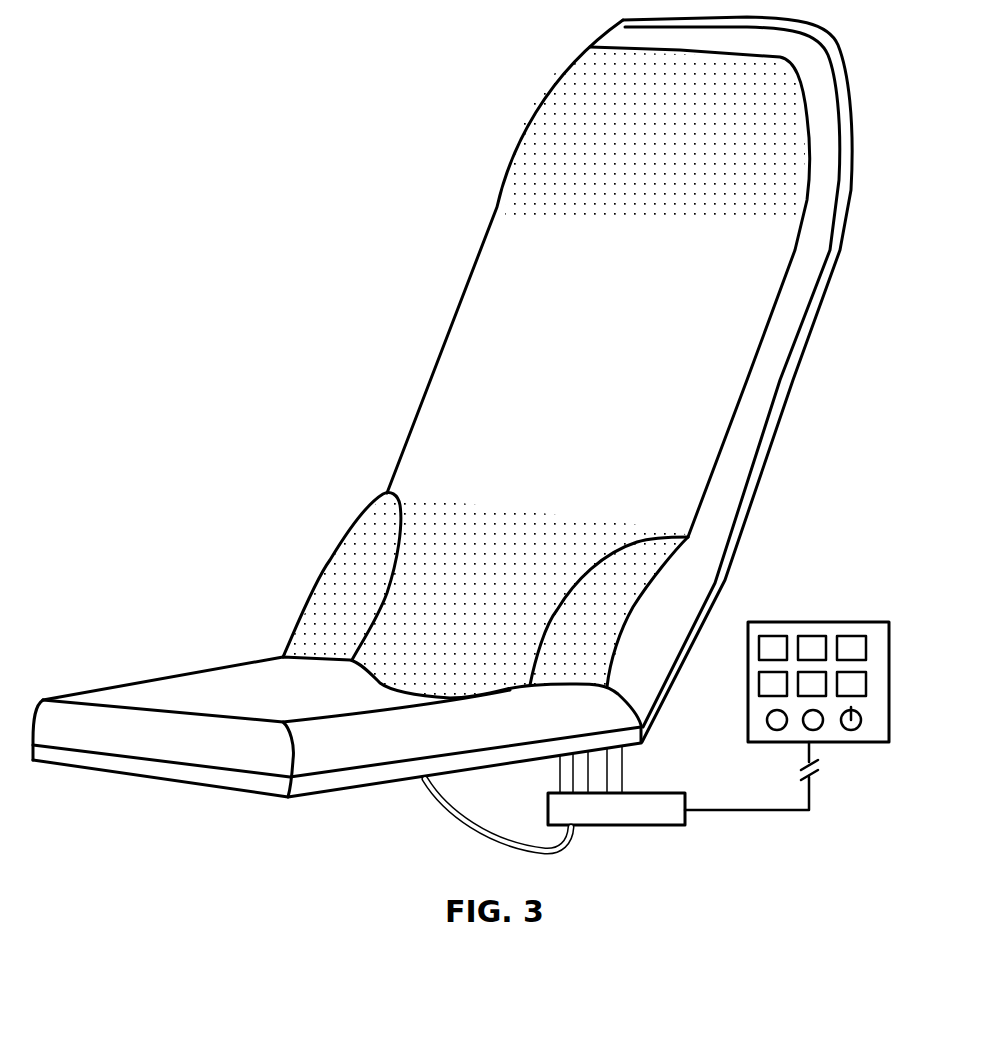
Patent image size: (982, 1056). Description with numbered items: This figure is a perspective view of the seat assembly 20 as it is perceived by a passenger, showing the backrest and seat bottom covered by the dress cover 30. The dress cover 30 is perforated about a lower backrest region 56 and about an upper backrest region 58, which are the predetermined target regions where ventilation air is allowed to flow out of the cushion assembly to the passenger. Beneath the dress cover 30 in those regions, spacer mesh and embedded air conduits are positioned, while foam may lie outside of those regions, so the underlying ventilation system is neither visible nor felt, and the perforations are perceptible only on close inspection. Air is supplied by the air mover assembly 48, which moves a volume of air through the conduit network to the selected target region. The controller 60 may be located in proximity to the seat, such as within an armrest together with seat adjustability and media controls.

The seat assembly 20 is at (442, 407).
The dress cover 30 is at (455, 395).
The air mover assembly 48 is at (625, 827).
The lower backrest region 56 is at (422, 612).
The upper backrest region 58 is at (575, 122).
The controller 60 is at (807, 622).